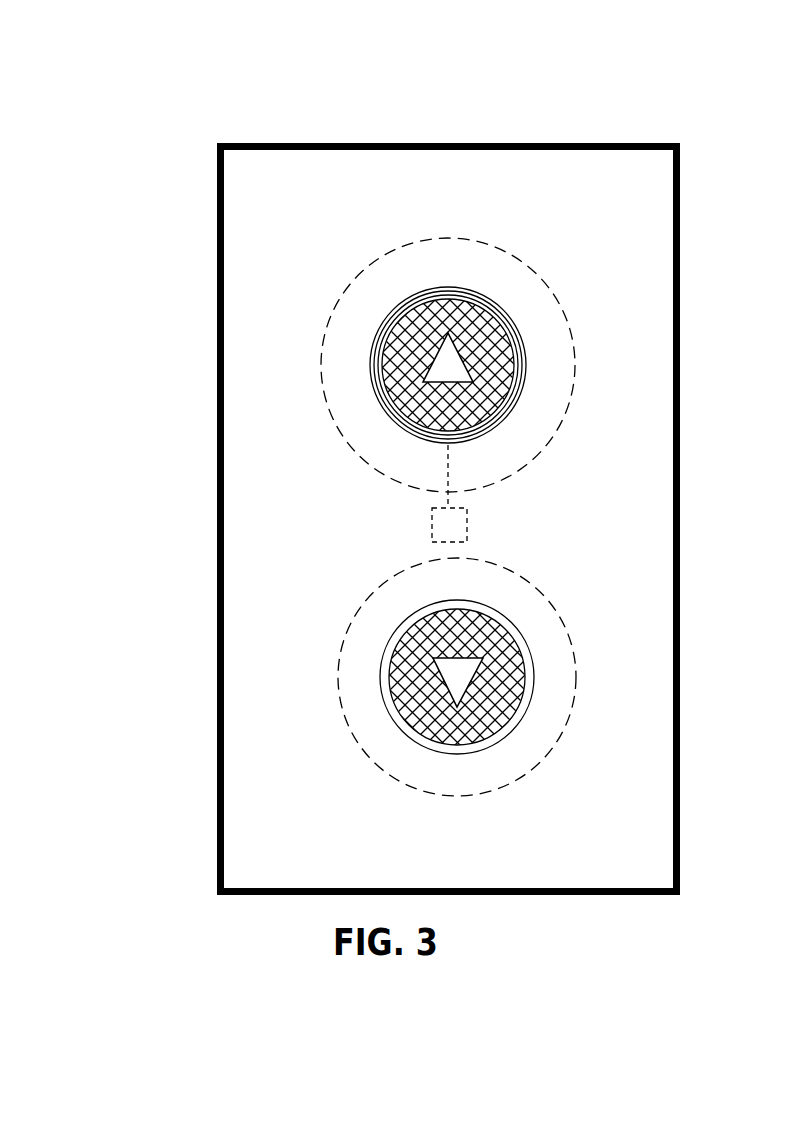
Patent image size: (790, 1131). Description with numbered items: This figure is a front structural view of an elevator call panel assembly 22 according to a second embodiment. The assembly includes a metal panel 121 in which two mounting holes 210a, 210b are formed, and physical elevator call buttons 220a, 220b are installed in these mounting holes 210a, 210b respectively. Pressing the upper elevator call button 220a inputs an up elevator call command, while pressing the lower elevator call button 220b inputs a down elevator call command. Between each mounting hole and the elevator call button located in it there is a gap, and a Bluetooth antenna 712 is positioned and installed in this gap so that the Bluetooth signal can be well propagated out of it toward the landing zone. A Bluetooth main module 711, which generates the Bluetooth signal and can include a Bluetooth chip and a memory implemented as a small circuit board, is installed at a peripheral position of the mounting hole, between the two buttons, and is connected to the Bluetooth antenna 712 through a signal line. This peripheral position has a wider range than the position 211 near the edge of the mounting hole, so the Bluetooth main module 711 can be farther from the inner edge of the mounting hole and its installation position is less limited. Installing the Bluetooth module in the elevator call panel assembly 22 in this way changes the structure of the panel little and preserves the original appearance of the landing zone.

The elevator call panel assembly 22 is at (371, 446).
The metal panel 121 is at (217, 205).
The mounting hole 210a is at (429, 331).
The mounting hole 210b is at (433, 650).
The position near the edge 211 is at (552, 312).
The elevator call button 220a is at (429, 371).
The elevator call button 220b is at (433, 687).
The Bluetooth main module 711 is at (433, 528).
The Bluetooth antenna 712 is at (444, 386).